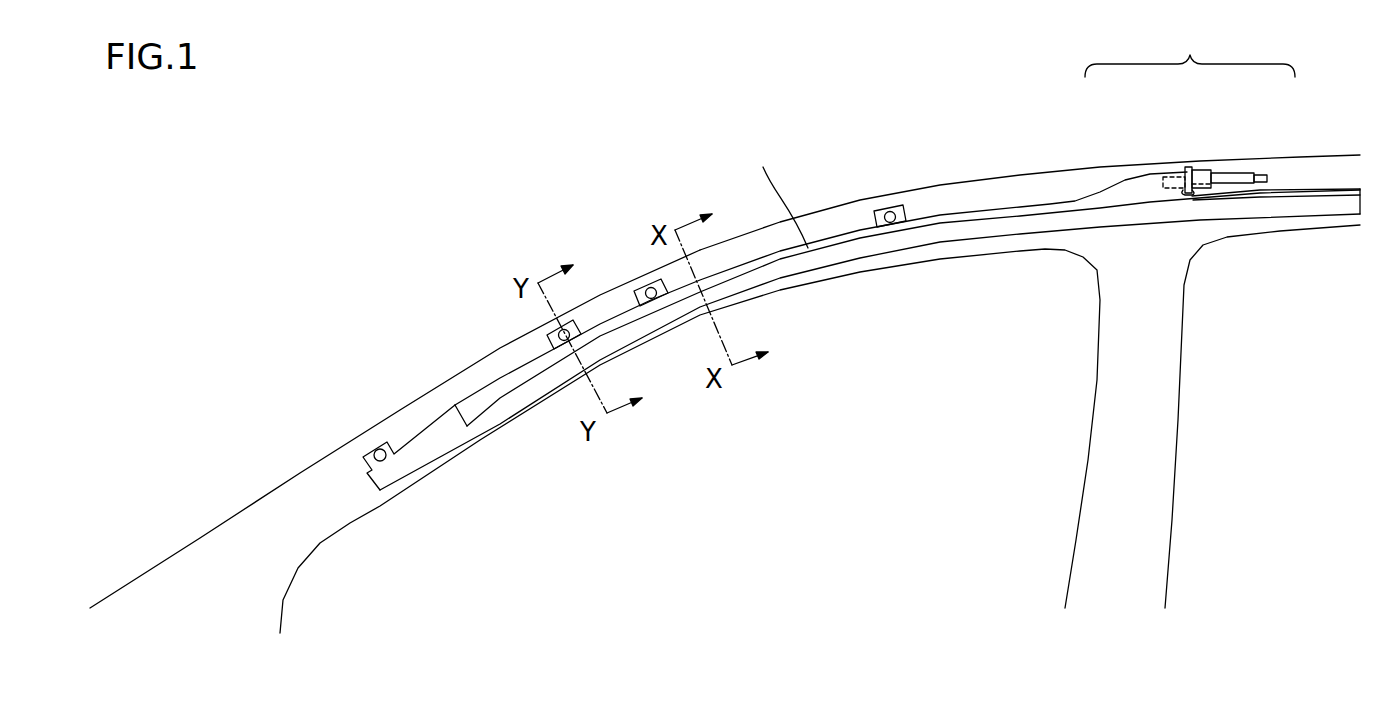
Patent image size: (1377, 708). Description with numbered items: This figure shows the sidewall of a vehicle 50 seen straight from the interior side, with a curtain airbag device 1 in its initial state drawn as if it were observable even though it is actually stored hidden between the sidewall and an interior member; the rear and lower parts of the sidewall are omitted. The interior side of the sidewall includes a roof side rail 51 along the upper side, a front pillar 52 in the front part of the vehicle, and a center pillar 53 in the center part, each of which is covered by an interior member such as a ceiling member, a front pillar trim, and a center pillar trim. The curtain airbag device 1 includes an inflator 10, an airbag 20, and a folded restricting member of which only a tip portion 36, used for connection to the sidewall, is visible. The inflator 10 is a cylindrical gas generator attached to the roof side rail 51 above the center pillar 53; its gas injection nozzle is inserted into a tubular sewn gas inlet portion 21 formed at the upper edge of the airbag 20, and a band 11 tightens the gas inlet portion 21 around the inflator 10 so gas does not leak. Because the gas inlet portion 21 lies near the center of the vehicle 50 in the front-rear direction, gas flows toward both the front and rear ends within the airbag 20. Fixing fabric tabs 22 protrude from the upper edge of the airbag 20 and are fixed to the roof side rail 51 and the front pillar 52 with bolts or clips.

The curtain airbag device 1 is at (1198, 53).
The inflator 10 is at (1252, 172).
The band 11 is at (1195, 193).
The airbag 20 is at (1066, 205).
The gas inlet portion 21 is at (1152, 191).
The tabs 22 is at (562, 333).
The tip portion 36 is at (375, 450).
The vehicle 50 is at (712, 150).
The roof side rail 51 is at (975, 190).
The front pillar 52 is at (447, 386).
The center pillar 53 is at (1152, 440).